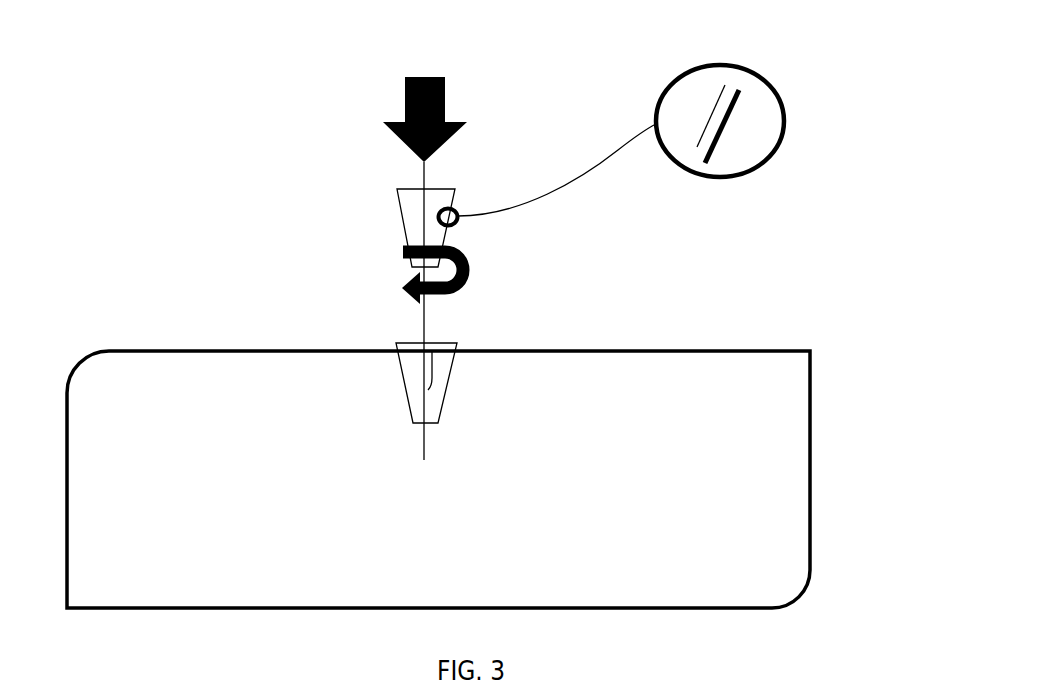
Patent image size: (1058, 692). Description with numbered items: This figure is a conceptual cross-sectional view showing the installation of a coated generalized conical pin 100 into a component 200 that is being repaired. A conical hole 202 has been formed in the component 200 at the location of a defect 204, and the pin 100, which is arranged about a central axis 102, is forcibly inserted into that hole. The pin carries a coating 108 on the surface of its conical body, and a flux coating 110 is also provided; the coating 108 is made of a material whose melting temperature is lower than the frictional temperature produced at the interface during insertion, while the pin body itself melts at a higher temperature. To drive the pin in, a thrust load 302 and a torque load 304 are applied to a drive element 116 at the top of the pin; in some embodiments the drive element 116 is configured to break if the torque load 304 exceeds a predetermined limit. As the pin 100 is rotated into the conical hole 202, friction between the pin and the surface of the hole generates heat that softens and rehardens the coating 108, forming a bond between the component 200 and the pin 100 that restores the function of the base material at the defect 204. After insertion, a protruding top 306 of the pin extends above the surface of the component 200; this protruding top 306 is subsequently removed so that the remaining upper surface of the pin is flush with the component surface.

The generalized conical pin 100 is at (398, 217).
The central axis 102 is at (425, 180).
The drive element 116 is at (450, 208).
The coating 108 is at (717, 98).
The flux coating 110 is at (730, 110).
The component 200 is at (740, 352).
The conical hole 202 is at (400, 383).
The defect 204 is at (434, 377).
The thrust load 302 is at (403, 107).
The torque load 304 is at (468, 268).
The protruding top 306 is at (455, 344).